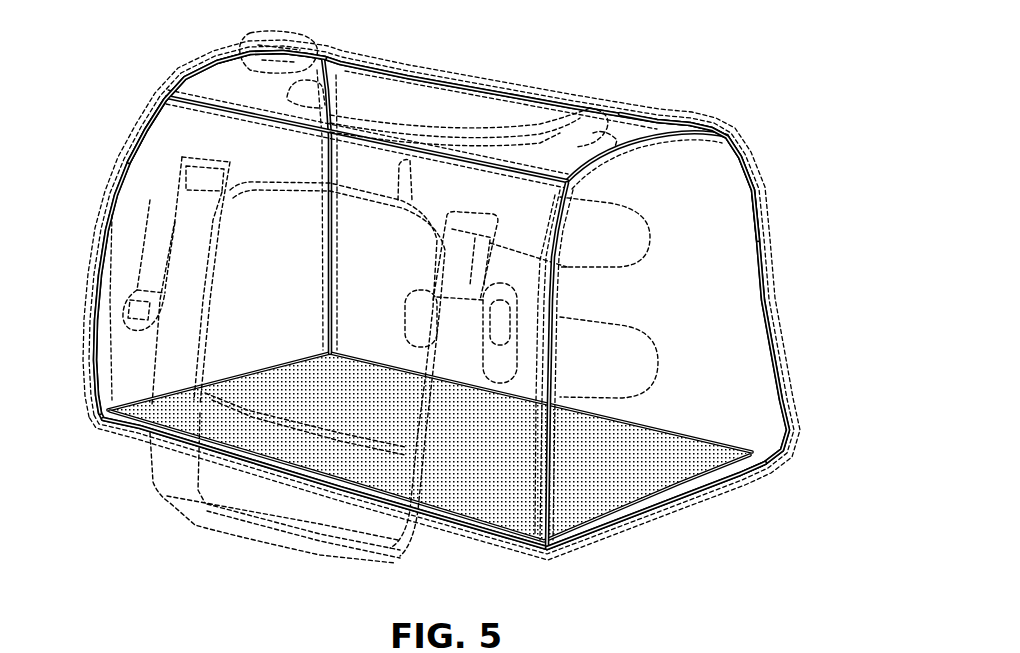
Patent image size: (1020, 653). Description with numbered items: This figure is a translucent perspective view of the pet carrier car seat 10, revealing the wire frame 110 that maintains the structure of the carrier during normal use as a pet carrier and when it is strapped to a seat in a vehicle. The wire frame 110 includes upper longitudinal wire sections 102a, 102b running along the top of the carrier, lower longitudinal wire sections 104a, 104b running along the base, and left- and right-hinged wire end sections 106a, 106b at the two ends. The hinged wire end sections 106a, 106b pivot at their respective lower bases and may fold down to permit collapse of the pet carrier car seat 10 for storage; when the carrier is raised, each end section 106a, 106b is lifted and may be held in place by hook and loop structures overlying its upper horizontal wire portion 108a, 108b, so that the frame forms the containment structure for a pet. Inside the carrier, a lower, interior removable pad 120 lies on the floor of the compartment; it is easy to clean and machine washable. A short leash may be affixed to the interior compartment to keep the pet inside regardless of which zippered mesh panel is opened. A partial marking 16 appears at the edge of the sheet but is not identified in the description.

The pet carrier car seat 10 is at (817, 106).
The upper longitudinal wire section 102a is at (528, 172).
The upper longitudinal wire section 102b is at (617, 112).
The lower longitudinal wire section 104a is at (482, 528).
The lower longitudinal wire section 104b is at (705, 452).
The left-hinged wire end section 106a is at (120, 178).
The right-hinged wire end section 106b is at (770, 240).
The upper horizontal wire portion 108a is at (193, 74).
The upper horizontal wire portion 108b is at (672, 122).
The wire frame 110 is at (347, 32).
The removable pad 120 is at (656, 481).
The partial reference at sheet edge 16 is at (22, 652).